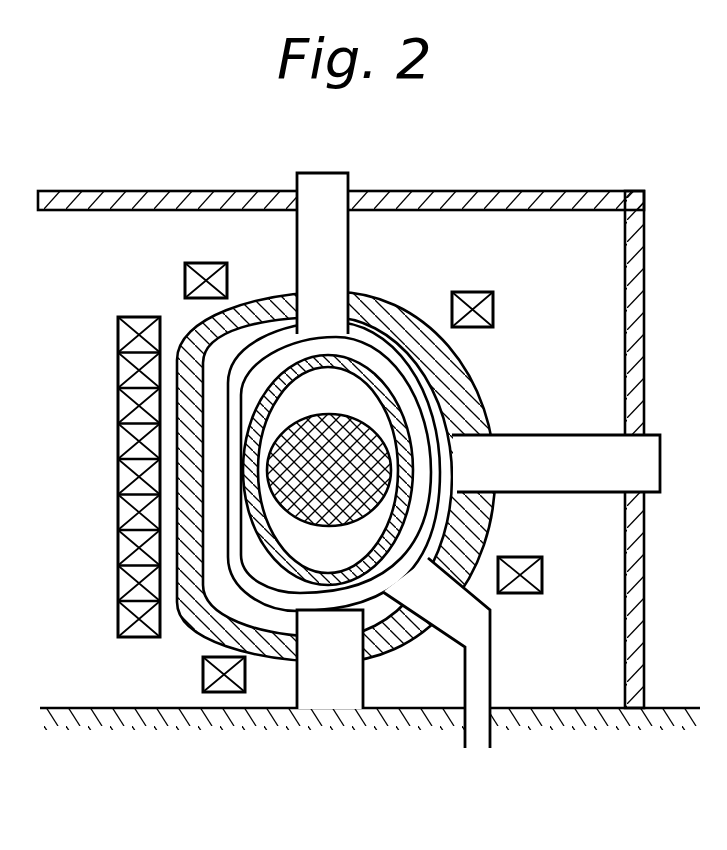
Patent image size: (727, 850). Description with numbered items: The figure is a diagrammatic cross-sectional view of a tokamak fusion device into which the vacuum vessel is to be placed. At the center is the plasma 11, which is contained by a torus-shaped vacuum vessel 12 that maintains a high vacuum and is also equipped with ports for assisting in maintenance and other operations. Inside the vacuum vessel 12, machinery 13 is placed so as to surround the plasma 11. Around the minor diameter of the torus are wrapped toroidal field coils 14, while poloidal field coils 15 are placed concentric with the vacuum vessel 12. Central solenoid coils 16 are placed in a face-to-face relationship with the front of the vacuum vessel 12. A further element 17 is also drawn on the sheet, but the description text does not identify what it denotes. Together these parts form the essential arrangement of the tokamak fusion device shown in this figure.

The plasma 11 is at (382, 440).
The vacuum vessel 12 is at (382, 358).
The machinery 13 is at (288, 366).
The toroidal field coils 14 is at (492, 513).
The poloidal field coils 15 is at (543, 578).
The central solenoid coils 16 is at (123, 401).
The inlet pipe 17 is at (349, 240).